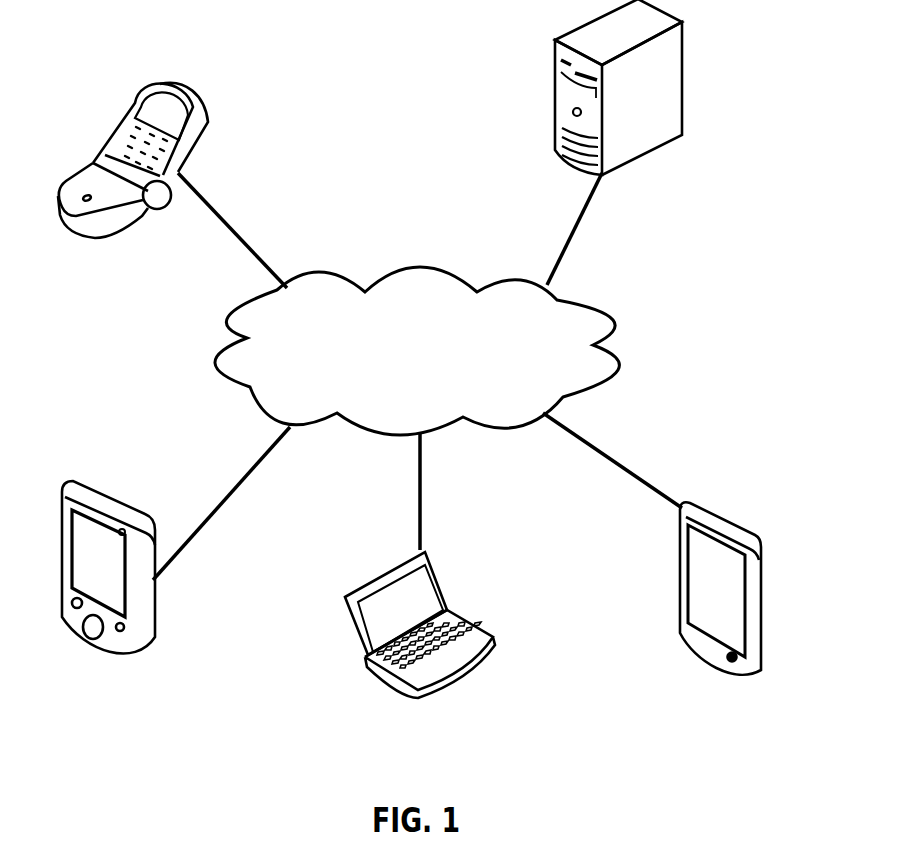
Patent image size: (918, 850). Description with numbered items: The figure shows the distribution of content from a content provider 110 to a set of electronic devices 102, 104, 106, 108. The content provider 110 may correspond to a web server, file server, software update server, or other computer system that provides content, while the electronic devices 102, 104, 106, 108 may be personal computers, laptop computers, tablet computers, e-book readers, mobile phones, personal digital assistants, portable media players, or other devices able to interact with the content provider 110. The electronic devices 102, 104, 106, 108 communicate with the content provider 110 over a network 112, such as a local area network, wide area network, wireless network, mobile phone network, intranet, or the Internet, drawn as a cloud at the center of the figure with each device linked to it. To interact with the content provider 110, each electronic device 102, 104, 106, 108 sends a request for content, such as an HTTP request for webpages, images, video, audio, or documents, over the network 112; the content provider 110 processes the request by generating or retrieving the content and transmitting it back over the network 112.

The electronic device 102 is at (118, 187).
The electronic device 104 is at (700, 618).
The electronic device 106 is at (417, 655).
The electronic device 108 is at (108, 601).
The content provider 110 is at (663, 87).
The network 112 is at (417, 351).